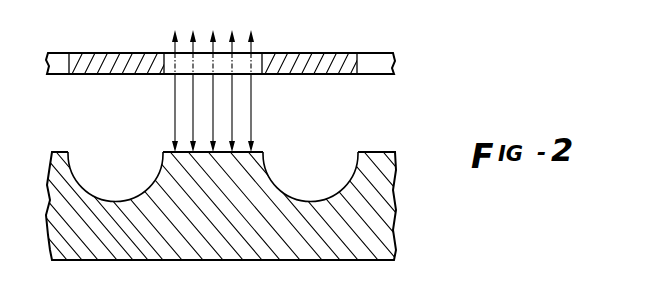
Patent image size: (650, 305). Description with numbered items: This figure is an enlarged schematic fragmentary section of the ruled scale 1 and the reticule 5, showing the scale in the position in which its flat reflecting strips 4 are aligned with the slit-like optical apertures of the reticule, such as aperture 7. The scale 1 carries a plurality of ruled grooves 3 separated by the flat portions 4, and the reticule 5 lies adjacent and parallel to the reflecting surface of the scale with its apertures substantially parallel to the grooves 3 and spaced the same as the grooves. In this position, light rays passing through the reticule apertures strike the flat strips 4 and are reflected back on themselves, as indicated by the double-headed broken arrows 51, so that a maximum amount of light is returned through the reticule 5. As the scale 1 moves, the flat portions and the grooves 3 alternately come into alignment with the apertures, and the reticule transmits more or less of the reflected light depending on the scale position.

The scale 1 is at (384, 162).
The grooves 3 is at (287, 196).
The flat reflecting strips 4 is at (238, 153).
The reticule 5 is at (315, 58).
The optical aperture 7 is at (260, 57).
The double-headed broken arrows 51 is at (253, 101).